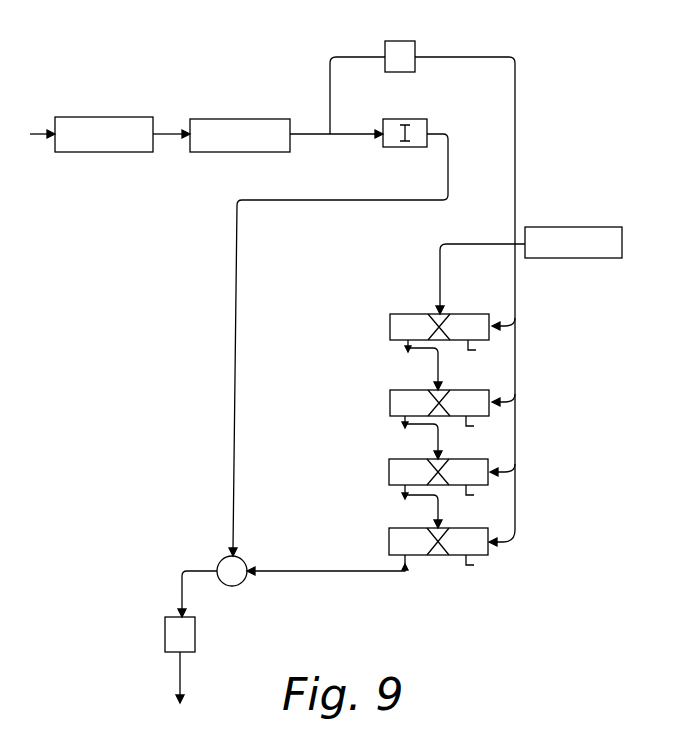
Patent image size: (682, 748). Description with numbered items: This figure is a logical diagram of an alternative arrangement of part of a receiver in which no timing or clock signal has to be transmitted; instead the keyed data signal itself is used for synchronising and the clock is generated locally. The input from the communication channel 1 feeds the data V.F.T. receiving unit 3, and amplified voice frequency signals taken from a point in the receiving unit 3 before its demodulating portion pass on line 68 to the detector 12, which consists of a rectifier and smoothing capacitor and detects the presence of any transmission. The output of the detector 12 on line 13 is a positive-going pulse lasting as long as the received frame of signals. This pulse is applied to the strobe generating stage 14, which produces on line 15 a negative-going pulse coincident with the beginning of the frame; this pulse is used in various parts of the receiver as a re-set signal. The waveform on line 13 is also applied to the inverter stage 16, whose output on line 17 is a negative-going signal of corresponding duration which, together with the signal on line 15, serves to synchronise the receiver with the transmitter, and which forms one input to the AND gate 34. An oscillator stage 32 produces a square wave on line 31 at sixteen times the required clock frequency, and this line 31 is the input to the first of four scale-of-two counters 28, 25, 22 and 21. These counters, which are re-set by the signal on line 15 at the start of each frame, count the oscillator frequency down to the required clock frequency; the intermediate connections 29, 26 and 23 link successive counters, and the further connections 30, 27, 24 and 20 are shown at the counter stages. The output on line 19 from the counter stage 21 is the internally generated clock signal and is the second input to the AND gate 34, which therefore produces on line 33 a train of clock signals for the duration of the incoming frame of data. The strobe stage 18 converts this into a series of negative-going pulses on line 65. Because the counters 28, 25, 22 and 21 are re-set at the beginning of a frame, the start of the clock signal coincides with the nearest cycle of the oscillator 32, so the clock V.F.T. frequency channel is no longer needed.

The communication channel 1 is at (42, 130).
The data V.F.T. receiving unit 3 is at (118, 116).
The line 68 is at (168, 131).
The detector 12 is at (237, 126).
The line 13 is at (337, 107).
The strobe generating stage 14 is at (401, 41).
The inverter stage 16 is at (399, 121).
The line 15 is at (515, 125).
The line 17 is at (448, 165).
The oscillator stage 32 is at (568, 227).
The line 31 is at (466, 244).
The scale-of-two counter 28 is at (480, 305).
The mixer stage output 30 is at (485, 353).
The connection line 29 is at (423, 365).
The scale-of-two counter 25 is at (475, 392).
The mixer stage output 27 is at (483, 429).
The connection line 26 is at (422, 437).
The scale-of-two counter 22 is at (474, 461).
The mixer stage output 24 is at (483, 499).
The connection line 23 is at (422, 506).
The scale-of-two counter 21 is at (474, 531).
The mixer stage output 20 is at (483, 569).
The line 19 is at (327, 575).
The AND gate 34 is at (232, 586).
The line 33 is at (210, 570).
The strobe stage 18 is at (195, 637).
The line 65 is at (180, 673).